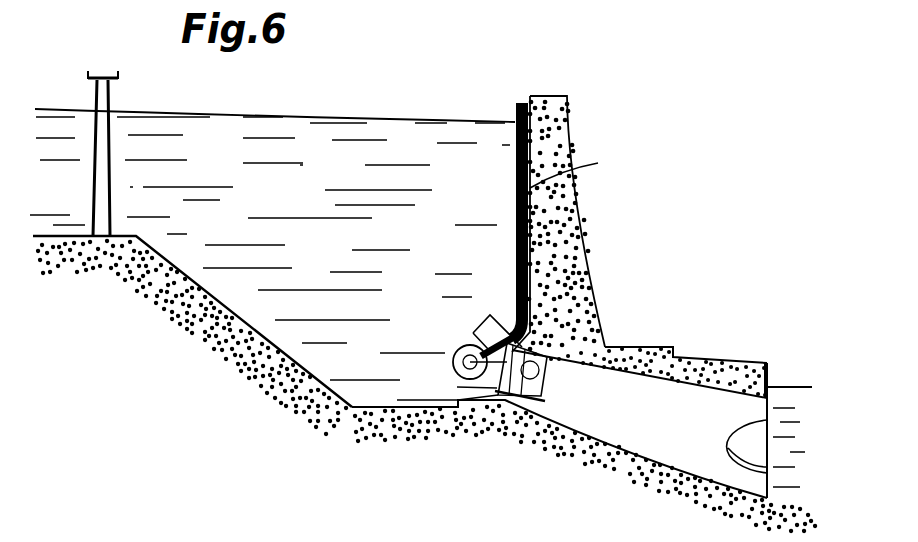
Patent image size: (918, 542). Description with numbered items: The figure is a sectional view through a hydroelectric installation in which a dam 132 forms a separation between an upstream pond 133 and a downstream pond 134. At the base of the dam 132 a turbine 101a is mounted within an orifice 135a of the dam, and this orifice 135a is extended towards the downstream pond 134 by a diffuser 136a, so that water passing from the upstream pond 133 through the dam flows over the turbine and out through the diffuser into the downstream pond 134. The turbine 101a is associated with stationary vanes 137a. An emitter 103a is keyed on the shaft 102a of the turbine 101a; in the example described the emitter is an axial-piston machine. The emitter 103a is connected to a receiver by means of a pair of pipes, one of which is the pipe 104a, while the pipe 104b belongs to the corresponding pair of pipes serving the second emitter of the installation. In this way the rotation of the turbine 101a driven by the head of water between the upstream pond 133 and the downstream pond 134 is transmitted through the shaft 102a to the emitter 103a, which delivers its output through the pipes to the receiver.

The turbine 101a is at (537, 398).
The shaft 102a is at (514, 350).
The emitter 103a is at (462, 376).
The pipe 104a is at (516, 185).
The pipe 104b is at (586, 168).
The dam 132 is at (581, 223).
The upstream pond 133 is at (420, 129).
The downstream pond 134 is at (782, 394).
The orifice 135a is at (536, 372).
The diffuser 136a is at (643, 387).
The stationary vanes 137a is at (476, 331).